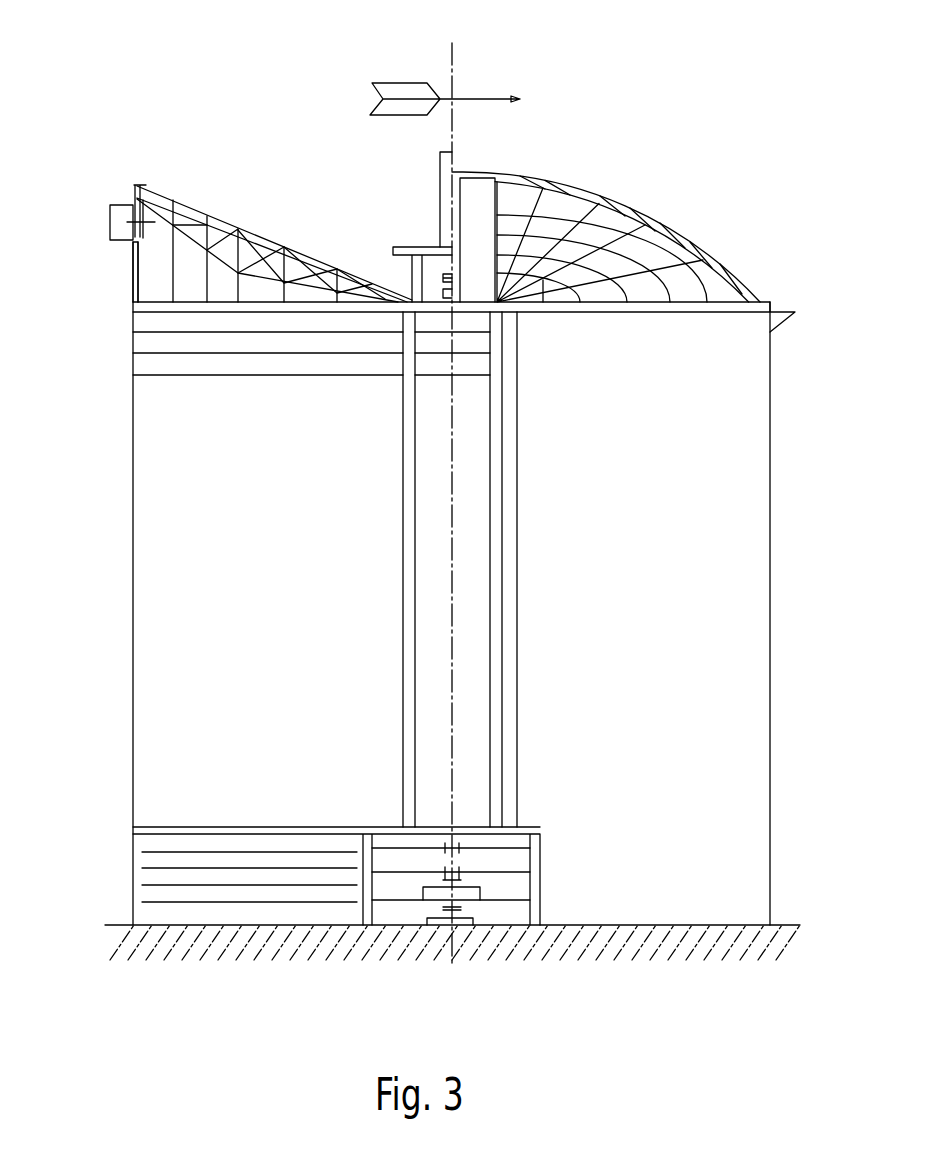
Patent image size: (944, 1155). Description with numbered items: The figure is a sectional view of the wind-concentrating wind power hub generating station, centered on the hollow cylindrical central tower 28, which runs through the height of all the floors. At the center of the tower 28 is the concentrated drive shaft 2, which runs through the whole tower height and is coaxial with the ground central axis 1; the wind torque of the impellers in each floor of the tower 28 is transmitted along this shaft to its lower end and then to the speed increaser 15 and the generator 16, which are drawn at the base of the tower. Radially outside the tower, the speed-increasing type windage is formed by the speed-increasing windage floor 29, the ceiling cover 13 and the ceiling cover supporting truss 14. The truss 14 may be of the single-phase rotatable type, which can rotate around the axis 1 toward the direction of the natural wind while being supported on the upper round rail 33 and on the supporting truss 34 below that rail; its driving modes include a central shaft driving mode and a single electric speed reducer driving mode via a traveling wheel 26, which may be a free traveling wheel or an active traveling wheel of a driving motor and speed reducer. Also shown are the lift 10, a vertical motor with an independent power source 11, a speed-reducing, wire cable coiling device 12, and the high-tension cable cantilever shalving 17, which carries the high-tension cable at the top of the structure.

The central axis 1 is at (452, 62).
The concentrated drive shaft 2 is at (457, 843).
The lift 10 is at (390, 90).
The vertical motor with an independent power source 11 is at (445, 277).
The speed-reducing, wire cable coiling device 12 is at (445, 291).
The ceiling cover 13 is at (549, 182).
The ceiling cover supporting truss 14 is at (580, 228).
The speed increaser 15 is at (472, 893).
The generator 16 is at (475, 920).
The high-tension cable cantilever shalving 17 is at (780, 312).
The traveling wheel 26 is at (120, 213).
The central tower 28 is at (502, 495).
The speed-increasing windage floor 29 is at (163, 827).
The upper round rail 33 is at (133, 240).
The supporting truss below the upper round rail 34 is at (135, 293).